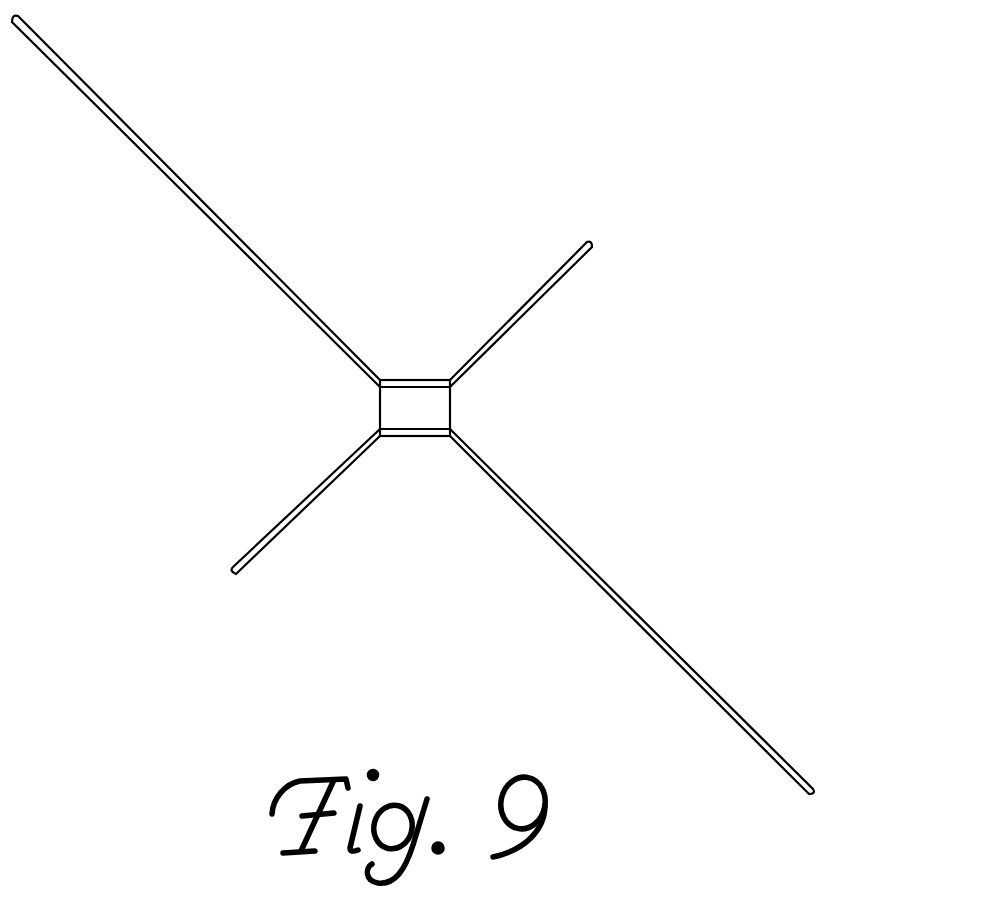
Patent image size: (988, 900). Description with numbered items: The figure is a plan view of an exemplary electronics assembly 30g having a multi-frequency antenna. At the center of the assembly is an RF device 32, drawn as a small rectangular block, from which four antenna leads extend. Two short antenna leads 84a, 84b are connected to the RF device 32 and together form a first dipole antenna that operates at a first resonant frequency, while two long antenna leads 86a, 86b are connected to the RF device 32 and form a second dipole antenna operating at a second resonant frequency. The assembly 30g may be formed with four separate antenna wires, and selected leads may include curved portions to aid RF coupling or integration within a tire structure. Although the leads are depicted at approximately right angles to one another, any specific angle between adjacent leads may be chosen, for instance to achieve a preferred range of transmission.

The electronics assembly 30g is at (712, 374).
The RF device 32 is at (452, 407).
The short antenna lead 84a is at (537, 304).
The short antenna lead 84b is at (313, 487).
The long antenna lead 86a is at (160, 165).
The long antenna lead 86b is at (571, 556).